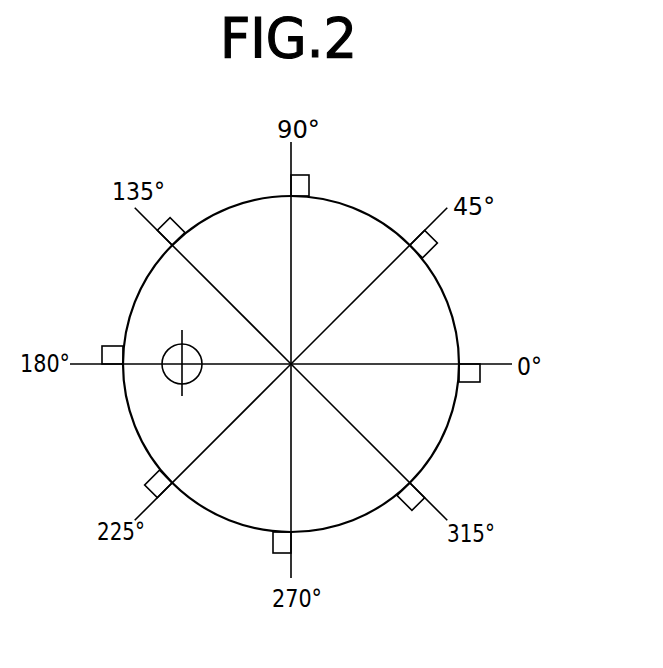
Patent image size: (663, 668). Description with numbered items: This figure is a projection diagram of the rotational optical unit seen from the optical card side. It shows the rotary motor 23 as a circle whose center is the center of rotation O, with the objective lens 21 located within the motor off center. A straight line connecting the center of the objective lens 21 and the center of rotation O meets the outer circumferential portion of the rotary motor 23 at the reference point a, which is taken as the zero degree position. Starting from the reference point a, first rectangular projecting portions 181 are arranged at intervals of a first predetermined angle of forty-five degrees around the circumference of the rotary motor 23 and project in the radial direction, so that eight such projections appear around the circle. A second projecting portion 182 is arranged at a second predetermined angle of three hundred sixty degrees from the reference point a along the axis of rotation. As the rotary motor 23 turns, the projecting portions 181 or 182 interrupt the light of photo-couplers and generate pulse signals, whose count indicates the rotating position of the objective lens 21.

The objective lens 21 is at (200, 345).
The rotary motor 23 is at (291, 357).
The first rectangular projecting portion 181 is at (291, 349).
The second projecting portion 182 is at (480, 173).
The reference point a is at (460, 364).
The center of rotation o is at (291, 360).